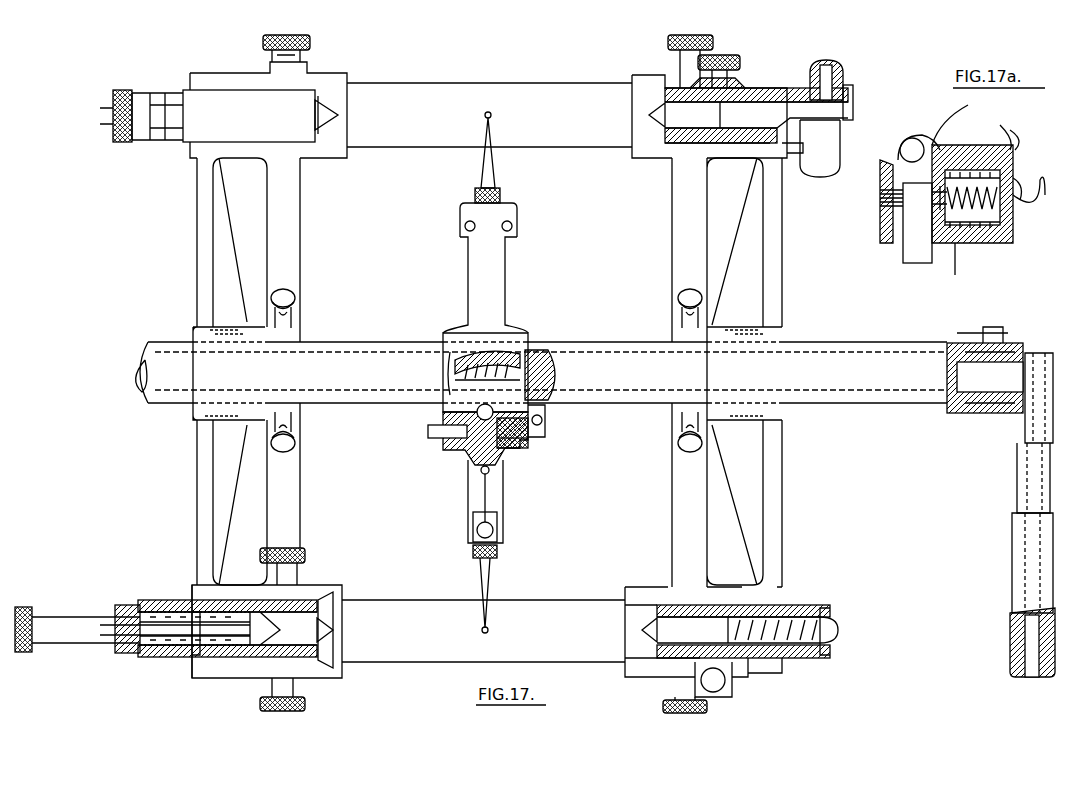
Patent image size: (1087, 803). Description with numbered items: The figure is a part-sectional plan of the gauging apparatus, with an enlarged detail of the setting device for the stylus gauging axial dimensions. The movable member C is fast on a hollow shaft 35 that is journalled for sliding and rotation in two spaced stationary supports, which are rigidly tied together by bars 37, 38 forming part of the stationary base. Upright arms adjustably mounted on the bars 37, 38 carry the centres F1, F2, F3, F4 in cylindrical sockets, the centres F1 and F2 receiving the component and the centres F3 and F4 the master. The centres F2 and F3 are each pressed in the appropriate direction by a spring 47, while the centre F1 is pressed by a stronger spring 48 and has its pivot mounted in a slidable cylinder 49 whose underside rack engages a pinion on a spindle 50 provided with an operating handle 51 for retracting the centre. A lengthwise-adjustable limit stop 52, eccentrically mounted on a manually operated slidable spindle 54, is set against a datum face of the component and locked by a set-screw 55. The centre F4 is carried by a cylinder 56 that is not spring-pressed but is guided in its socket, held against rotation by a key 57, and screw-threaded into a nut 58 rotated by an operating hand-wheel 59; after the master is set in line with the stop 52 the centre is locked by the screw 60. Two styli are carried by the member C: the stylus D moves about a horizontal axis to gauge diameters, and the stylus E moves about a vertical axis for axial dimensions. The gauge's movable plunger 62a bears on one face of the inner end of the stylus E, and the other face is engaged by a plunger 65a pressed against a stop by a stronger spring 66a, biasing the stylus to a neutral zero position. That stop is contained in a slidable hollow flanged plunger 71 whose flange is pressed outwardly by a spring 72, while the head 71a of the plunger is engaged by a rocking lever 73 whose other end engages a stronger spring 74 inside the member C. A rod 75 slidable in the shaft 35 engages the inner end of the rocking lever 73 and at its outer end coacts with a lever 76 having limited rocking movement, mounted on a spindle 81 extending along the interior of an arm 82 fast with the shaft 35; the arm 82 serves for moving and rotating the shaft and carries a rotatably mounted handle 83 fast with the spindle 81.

In FIG. 17, the hollow shaft 35 is at (847, 360).
In FIG. 17, the bar 37 is at (568, 612).
In FIG. 17, the bar 38 is at (572, 130).
In FIG. 17, the spring 47 is at (172, 650).
In FIG. 17, the spring 48 is at (790, 612).
In FIG. 17, the slidable cylinder 49 is at (662, 660).
In FIG. 17, the spindle 50 is at (735, 680).
In FIG. 17, the operating handle 51 is at (715, 688).
In FIG. 17, the limit stop 52 is at (333, 660).
In FIG. 17, the slidable spindle 54 is at (73, 645).
In FIG. 17, the set-screw 55 is at (300, 551).
In FIG. 17, the cylinder 56 is at (668, 140).
In FIG. 17, the key 57 is at (692, 85).
In FIG. 17, the nut 58 is at (845, 95).
In FIG. 17, the operating hand-wheel 59 is at (824, 160).
In FIG. 17, the screw 60 is at (740, 62).
In FIG. 17, the movable plunger 62a is at (463, 455).
In FIG. 17A, the movable plunger 62a is at (880, 200).
In FIG. 17, the plunger 65a is at (510, 455).
In FIG. 17A, the plunger 65a is at (965, 145).
In FIG. 17, the spring 66a is at (528, 440).
In FIG. 17A, the spring 66a is at (1000, 215).
In FIG. 17, the slidable hollow flanged plunger 71 is at (530, 433).
In FIG. 17A, the slidable hollow flanged plunger 71 is at (1013, 150).
In FIG. 17A, the head of the plunger 71a is at (1013, 190).
In FIG. 17, the spring 72 is at (520, 450).
In FIG. 17A, the spring 72 is at (975, 225).
In FIG. 17, the rocking lever 73 is at (540, 418).
In FIG. 17A, the rocking lever 73 is at (1038, 190).
In FIG. 17, the spring 74 is at (515, 366).
In FIG. 17, the rod 75 is at (555, 372).
In FIG. 17, the lever 76 is at (1043, 360).
In FIG. 17, the spindle 81 is at (1030, 632).
In FIG. 17, the arm 82 is at (1017, 482).
In FIG. 17, the handle 83 is at (1015, 580).
In FIG. 17, the movable member C is at (495, 310).
In FIG. 17, the stylus D is at (492, 178).
In FIG. 17, the stylus E is at (498, 578).
In FIG. 17A, the stylus E is at (912, 245).
In FIG. 17, the centre F1 is at (642, 630).
In FIG. 17, the centre F2 is at (325, 630).
In FIG. 17, the centre F3 is at (338, 113).
In FIG. 17, the centre F4 is at (649, 115).